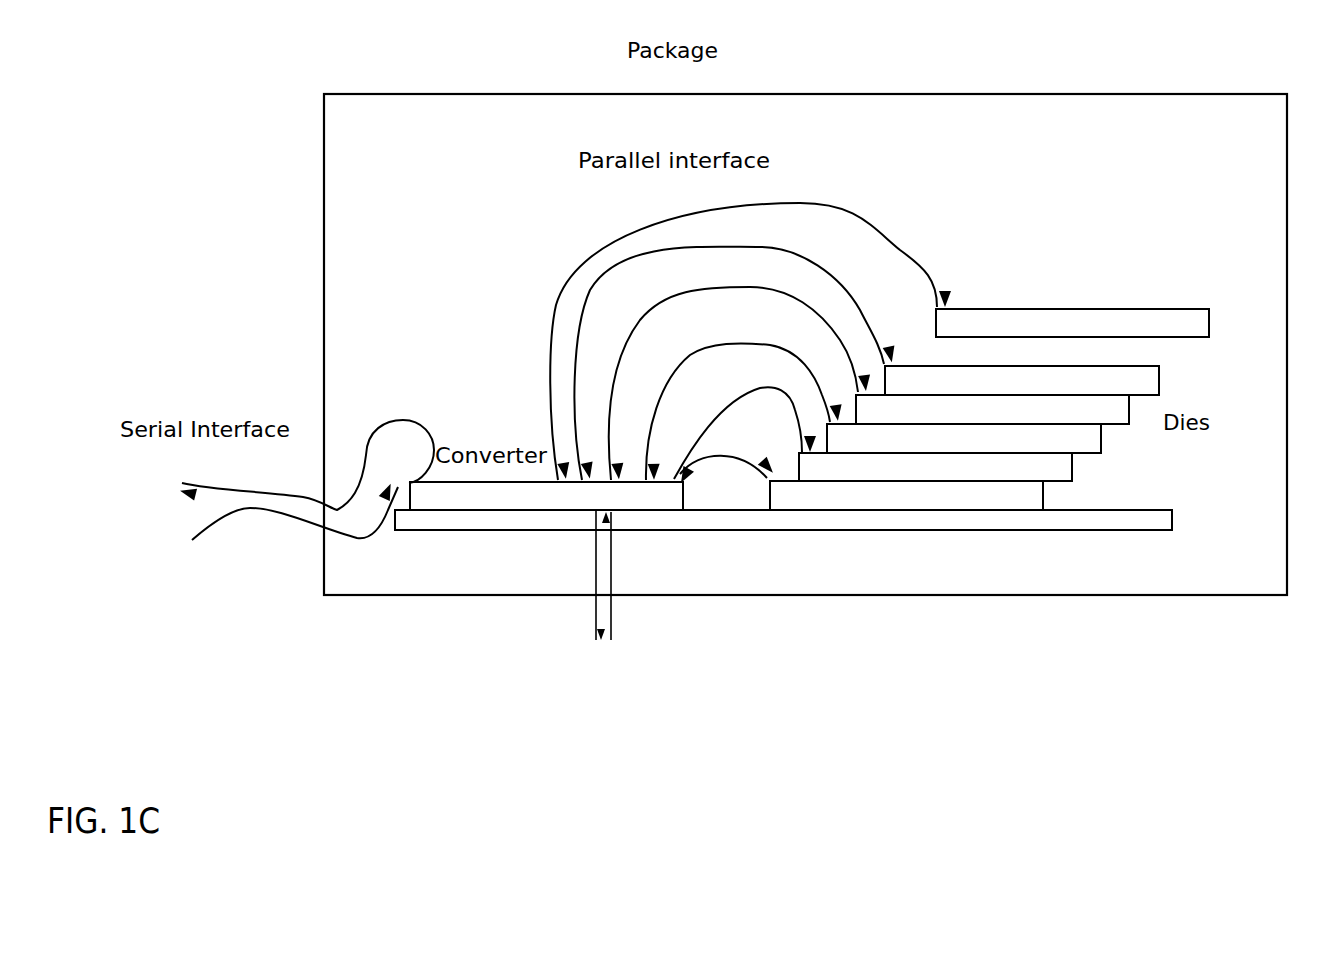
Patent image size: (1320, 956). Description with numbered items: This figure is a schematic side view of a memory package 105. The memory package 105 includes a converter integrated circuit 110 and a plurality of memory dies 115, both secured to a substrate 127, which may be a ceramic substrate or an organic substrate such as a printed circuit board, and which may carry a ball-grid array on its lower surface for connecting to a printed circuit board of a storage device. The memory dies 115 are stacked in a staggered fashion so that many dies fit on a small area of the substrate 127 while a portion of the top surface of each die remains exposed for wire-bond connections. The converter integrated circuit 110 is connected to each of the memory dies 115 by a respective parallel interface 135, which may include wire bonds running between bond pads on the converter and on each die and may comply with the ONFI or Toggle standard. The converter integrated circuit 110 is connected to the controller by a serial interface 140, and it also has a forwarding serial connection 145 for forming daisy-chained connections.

The memory package 105 is at (835, 597).
The converter integrated circuit 110 is at (686, 491).
The memory dies 115 is at (1072, 470).
The substrate 127 is at (1118, 531).
The parallel interface 135 is at (547, 325).
The serial interface 140 is at (378, 408).
The forwarding serial connection 145 is at (618, 618).